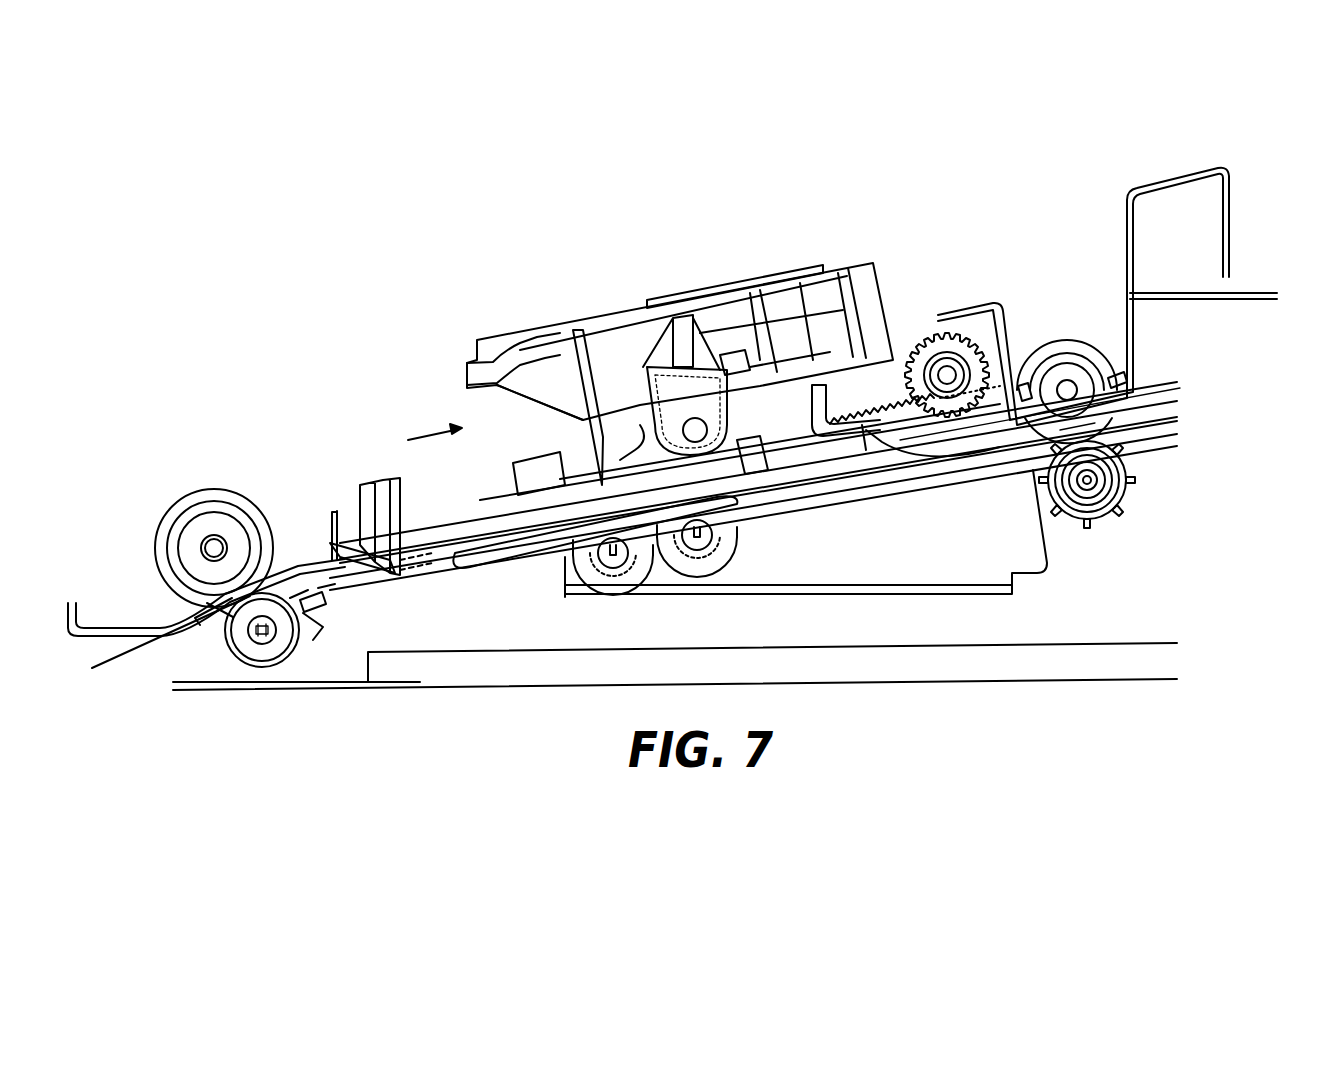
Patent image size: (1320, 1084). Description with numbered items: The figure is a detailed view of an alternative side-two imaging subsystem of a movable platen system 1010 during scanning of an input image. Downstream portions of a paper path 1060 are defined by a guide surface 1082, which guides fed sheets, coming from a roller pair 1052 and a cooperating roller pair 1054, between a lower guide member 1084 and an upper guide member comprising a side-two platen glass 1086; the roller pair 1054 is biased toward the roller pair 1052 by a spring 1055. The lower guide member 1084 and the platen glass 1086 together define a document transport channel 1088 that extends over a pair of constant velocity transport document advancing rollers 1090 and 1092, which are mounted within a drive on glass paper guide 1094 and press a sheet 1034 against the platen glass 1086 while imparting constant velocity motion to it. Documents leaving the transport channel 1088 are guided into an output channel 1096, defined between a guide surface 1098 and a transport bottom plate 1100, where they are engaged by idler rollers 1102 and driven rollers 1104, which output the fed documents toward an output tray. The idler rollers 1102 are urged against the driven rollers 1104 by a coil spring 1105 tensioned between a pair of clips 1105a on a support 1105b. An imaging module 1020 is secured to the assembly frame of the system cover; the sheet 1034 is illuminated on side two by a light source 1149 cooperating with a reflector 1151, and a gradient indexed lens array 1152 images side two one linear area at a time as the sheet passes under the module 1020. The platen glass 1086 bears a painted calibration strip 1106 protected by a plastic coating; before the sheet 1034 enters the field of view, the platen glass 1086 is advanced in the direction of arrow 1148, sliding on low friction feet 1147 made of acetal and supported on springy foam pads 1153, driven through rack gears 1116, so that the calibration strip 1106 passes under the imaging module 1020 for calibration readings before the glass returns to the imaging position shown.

The movable platen system 1010 is at (690, 262).
The imaging module 1020 is at (883, 290).
The sheet 1034 is at (420, 567).
The roller pair 1052 is at (195, 528).
The cooperating roller pair 1054 is at (260, 643).
The spring 1055 is at (280, 662).
The paper path 1060 is at (280, 573).
The guide surface 1082 is at (353, 532).
The lower guide member 1084 is at (350, 585).
The side-two platen glass 1086 is at (448, 533).
The document transport channel 1088 is at (460, 547).
The constant velocity transport document advancing roller 1090 is at (608, 590).
The constant velocity transport document advancing roller 1092 is at (713, 570).
The drive on glass paper guide 1094 is at (730, 505).
The output channel 1096 is at (993, 457).
The guide surface 1098 is at (942, 453).
The transport bottom plate 1100 is at (902, 480).
The idler rollers 1102 is at (1095, 423).
The driven rollers 1104 is at (1103, 500).
The coil spring 1105 is at (1068, 350).
The clips 1105a is at (1023, 380).
The support 1105b is at (1130, 330).
The painted calibration strip 1106 is at (433, 507).
The rack gears 1116 is at (838, 405).
The low friction feet 1147 is at (510, 477).
The arrow 1148 is at (437, 432).
The light source 1149 is at (692, 432).
The reflector 1151 is at (618, 463).
The gradient indexed lens array 1152 is at (633, 450).
The springy foam pads 1153 is at (533, 533).